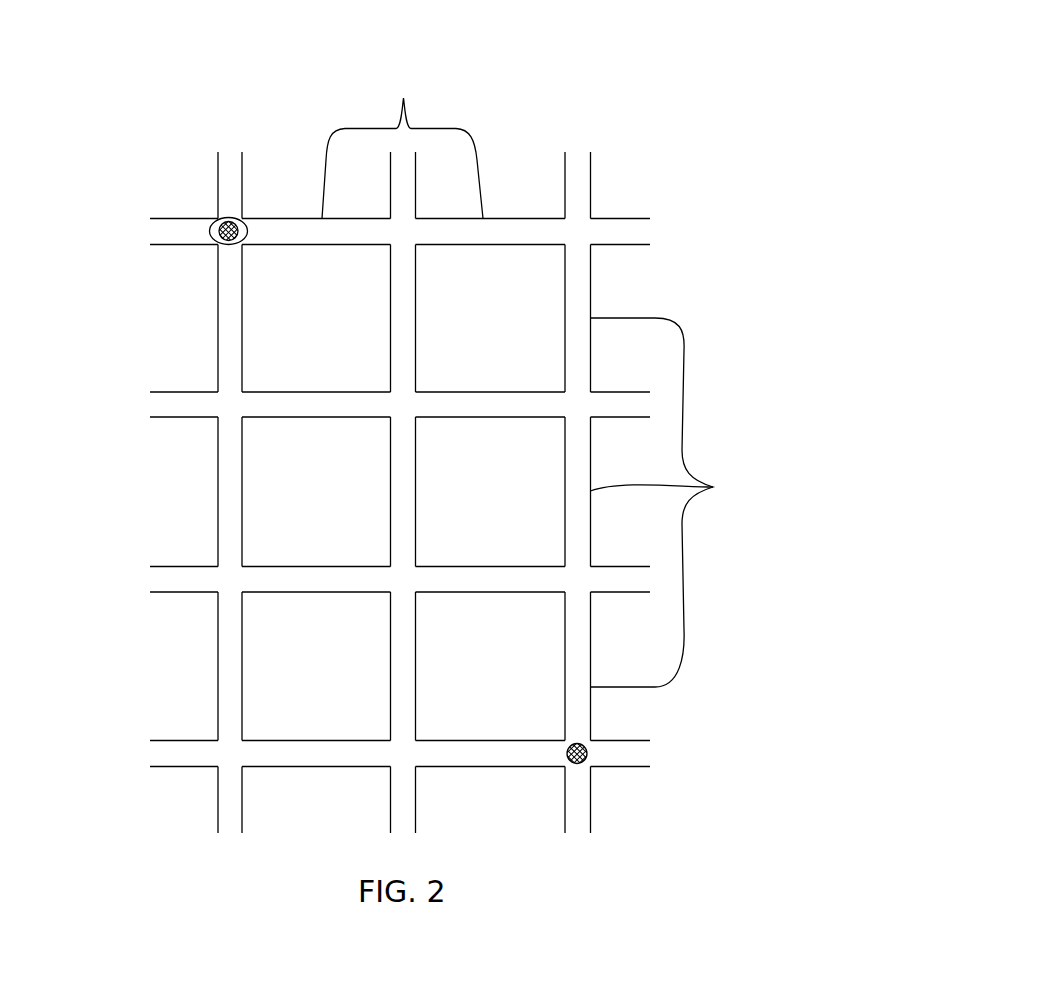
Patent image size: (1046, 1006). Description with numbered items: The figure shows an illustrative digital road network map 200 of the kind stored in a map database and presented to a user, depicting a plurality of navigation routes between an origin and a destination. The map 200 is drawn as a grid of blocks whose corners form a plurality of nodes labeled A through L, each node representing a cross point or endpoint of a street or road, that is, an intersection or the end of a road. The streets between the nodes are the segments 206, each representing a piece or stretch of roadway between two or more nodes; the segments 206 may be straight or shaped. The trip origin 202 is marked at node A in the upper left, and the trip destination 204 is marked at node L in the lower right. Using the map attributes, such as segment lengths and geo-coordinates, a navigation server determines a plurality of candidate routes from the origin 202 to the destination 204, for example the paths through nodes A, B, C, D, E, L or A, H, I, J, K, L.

The digital road network map 200 is at (614, 93).
The trip origin 202 is at (194, 204).
The trip destination 204 is at (616, 776).
The segments 206 is at (537, 381).